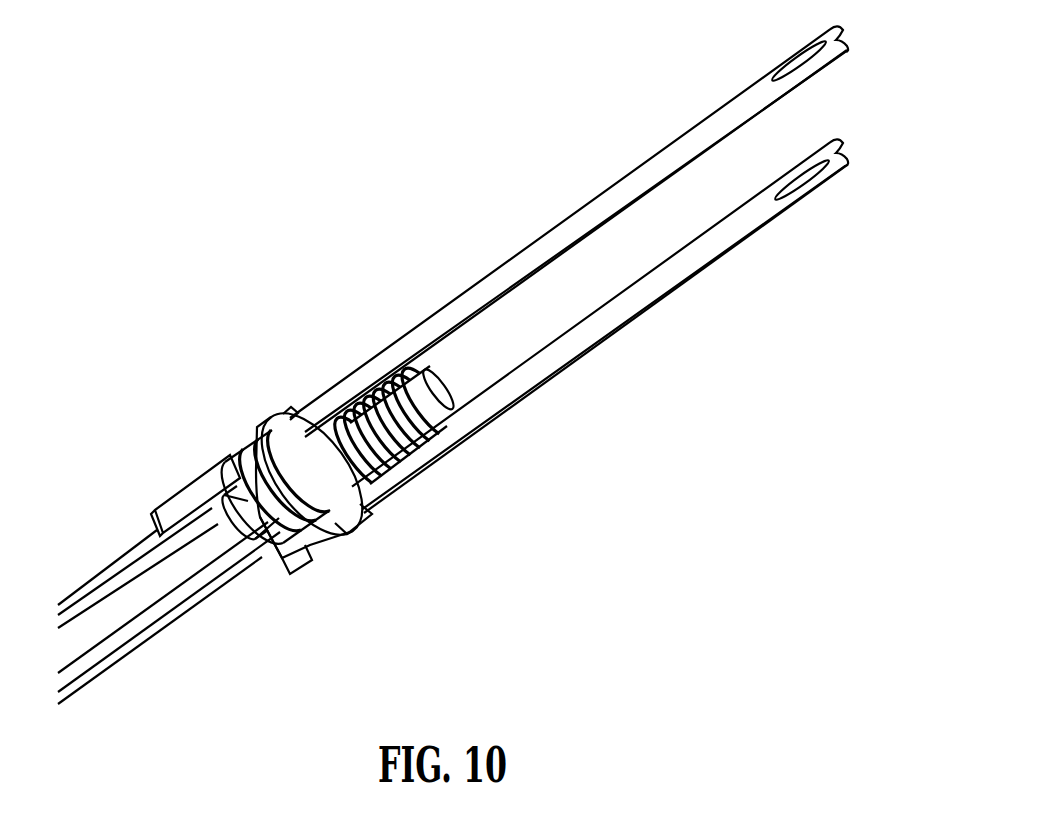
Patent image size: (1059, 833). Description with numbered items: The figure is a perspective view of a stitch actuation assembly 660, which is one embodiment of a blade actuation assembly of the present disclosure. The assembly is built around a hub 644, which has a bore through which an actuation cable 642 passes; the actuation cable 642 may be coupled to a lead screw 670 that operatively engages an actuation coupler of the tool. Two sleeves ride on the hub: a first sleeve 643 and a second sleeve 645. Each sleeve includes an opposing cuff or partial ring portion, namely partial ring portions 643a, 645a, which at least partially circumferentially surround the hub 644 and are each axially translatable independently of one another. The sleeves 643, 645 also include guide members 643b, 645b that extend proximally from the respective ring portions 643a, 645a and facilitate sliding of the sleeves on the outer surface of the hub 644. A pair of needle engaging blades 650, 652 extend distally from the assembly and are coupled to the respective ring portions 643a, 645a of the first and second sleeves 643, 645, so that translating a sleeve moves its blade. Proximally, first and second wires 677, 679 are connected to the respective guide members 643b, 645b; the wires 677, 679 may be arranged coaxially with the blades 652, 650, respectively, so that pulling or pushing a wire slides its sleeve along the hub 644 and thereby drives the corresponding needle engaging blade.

The actuation cable 642 is at (75, 650).
The first sleeve 643 is at (325, 531).
The partial ring portion 643a is at (340, 508).
The guide member 643b is at (270, 578).
The hub 644 is at (255, 463).
The second sleeve 645 is at (205, 486).
The partial ring portion 645a is at (292, 580).
The guide member 645b is at (165, 518).
The needle engaging blade 650 is at (725, 106).
The needle engaging blade 652 is at (757, 226).
The stitch actuation assembly 660 is at (596, 457).
The lead screw 670 is at (380, 393).
The first wire 677 is at (145, 643).
The second wire 679 is at (87, 592).